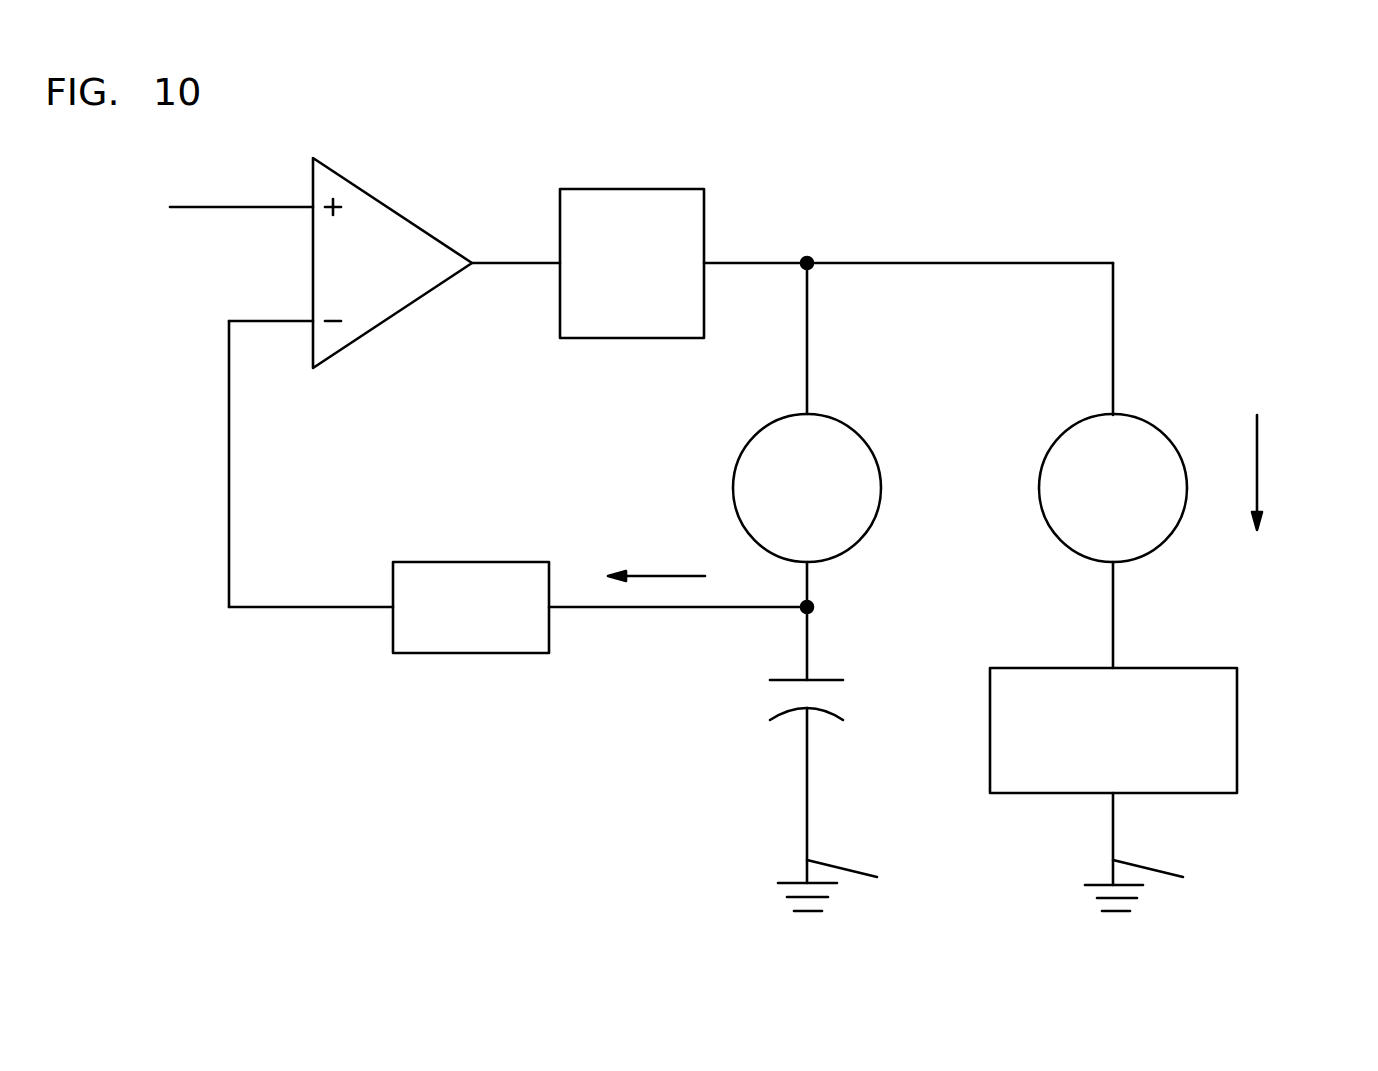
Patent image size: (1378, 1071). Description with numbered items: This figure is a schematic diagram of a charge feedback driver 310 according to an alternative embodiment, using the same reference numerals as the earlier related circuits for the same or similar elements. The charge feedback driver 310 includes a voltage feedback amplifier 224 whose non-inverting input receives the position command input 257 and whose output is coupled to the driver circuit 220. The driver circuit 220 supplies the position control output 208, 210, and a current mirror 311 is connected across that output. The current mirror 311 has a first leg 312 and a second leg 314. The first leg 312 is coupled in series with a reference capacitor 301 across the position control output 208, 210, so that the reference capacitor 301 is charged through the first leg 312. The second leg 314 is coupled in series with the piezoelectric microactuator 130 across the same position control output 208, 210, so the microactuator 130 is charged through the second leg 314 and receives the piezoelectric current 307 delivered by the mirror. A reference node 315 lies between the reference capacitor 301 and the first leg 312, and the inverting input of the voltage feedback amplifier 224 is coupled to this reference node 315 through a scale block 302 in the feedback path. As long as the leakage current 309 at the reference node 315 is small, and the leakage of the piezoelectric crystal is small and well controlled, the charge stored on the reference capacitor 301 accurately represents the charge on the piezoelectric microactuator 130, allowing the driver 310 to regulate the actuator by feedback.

The piezoelectric microactuator 130 is at (1237, 738).
The position control output 208 is at (1113, 263).
The position control output 210 is at (807, 813).
The driver circuit 220 is at (614, 189).
The voltage feedback amplifier 224 is at (387, 210).
The VCPC input 257 is at (218, 207).
The reference capacitor CREF 301 is at (822, 680).
The scale block 302 is at (473, 562).
The piezoelectric current IPZT 307 is at (1257, 445).
The leakage current ILEAK 309 is at (675, 576).
The charge feedback driver 310 is at (392, 768).
The current mirror 311 is at (1172, 398).
The first leg 312 is at (855, 430).
The second leg 314 is at (1053, 443).
The reference node 315 is at (812, 605).